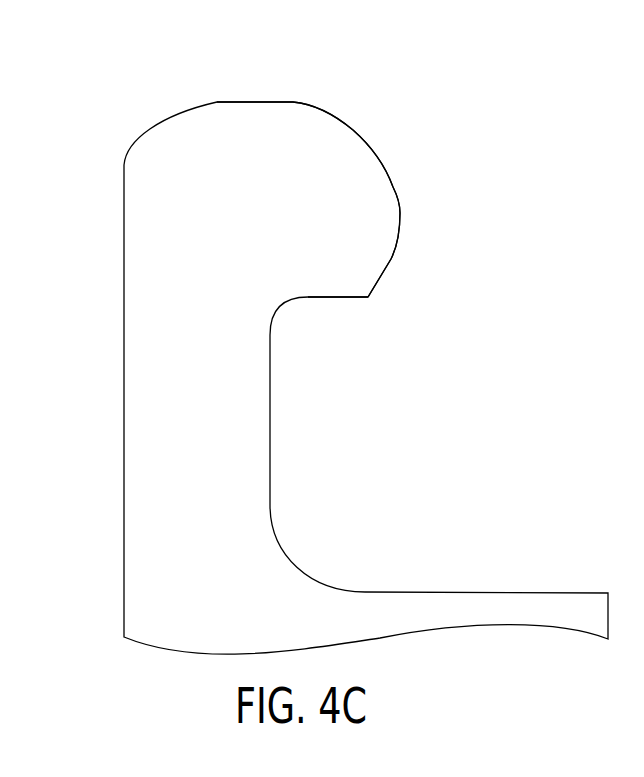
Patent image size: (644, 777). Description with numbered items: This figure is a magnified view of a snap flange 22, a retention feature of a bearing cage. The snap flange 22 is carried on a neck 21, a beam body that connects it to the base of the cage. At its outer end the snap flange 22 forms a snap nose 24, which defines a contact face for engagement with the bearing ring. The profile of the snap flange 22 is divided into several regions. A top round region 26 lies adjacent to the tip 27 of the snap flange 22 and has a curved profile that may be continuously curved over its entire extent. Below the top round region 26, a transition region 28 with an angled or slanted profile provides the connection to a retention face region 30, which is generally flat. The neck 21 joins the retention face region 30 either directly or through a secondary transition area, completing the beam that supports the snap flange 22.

The neck 21 is at (167, 442).
The snap flange 22 is at (331, 101).
The snap nose 24 is at (397, 192).
The top round region 26 is at (352, 128).
The tip 27 is at (257, 101).
The transition region 28 is at (383, 270).
The retention face region 30 is at (335, 298).